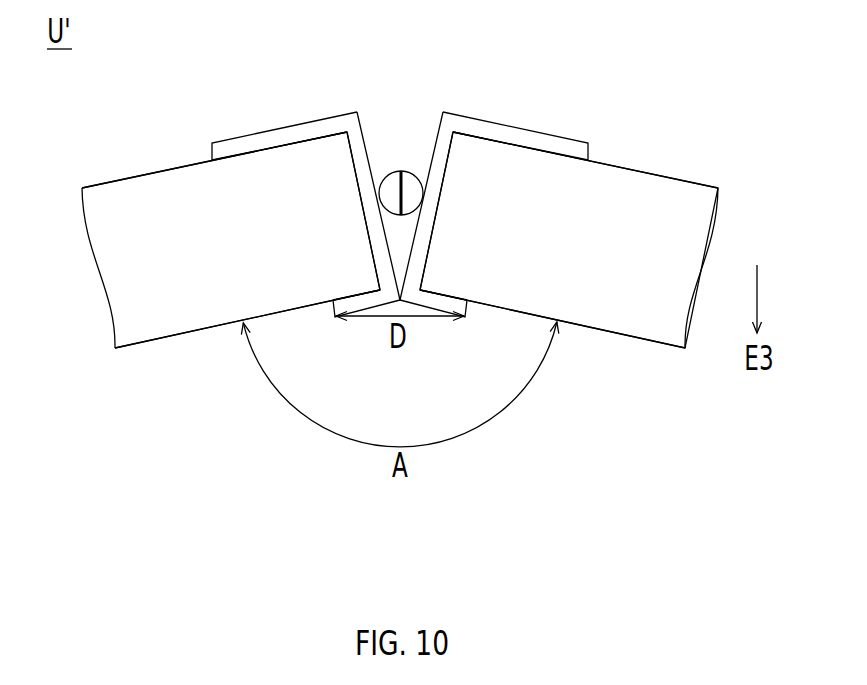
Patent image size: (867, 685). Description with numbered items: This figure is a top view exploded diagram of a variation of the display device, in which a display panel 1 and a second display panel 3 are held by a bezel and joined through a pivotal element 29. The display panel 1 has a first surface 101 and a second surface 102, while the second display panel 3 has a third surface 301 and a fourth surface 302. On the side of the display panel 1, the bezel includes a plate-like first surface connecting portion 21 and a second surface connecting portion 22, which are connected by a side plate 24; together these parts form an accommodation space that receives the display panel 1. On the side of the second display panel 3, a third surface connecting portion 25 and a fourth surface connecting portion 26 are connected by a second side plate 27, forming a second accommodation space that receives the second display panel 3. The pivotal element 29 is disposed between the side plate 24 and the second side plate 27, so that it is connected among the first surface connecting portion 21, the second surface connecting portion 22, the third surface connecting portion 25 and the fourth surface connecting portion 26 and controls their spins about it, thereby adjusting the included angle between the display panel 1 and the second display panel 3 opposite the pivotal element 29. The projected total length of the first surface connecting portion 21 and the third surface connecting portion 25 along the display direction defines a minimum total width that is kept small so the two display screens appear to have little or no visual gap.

The display panel 1 is at (164, 299).
The first surface 101 is at (188, 332).
The second surface 102 is at (145, 175).
The second display panel 3 is at (639, 309).
The third surface 301 is at (627, 338).
The fourth surface 302 is at (670, 177).
The first surface connecting portion 21 is at (335, 308).
The second surface connecting portion 22 is at (277, 140).
The side plate 24 is at (360, 142).
The third surface connecting portion 25 is at (465, 308).
The fourth surface connecting portion 26 is at (512, 135).
The second side plate 27 is at (442, 142).
The pivotal element 29 is at (410, 183).